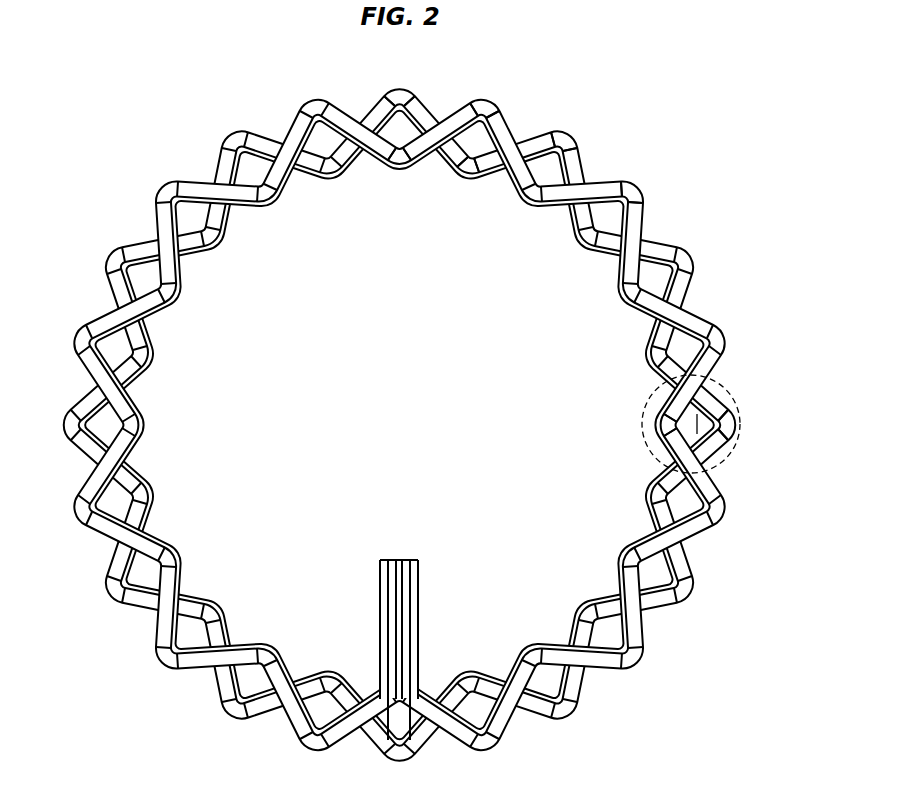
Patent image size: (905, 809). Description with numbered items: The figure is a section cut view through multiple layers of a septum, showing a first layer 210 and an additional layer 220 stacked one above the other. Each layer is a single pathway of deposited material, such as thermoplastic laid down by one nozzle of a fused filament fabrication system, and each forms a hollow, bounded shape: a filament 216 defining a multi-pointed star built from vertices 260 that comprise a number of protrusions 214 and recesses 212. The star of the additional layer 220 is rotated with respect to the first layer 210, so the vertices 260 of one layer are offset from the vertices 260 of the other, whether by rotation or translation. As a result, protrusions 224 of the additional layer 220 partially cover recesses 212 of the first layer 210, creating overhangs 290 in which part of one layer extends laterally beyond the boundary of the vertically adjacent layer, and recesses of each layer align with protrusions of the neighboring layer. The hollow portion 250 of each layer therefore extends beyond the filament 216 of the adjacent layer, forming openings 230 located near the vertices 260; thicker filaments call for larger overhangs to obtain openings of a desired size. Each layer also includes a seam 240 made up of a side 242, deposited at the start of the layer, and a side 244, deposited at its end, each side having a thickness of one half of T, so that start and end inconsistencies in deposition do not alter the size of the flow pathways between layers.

The first layer 210 is at (727, 330).
The additional layer 220 is at (703, 255).
The recesses 212 is at (660, 417).
The protrusions 214 is at (572, 138).
The filament 216 is at (632, 188).
The protrusions 224 is at (723, 393).
The openings 230 is at (695, 422).
The seam 240 is at (423, 553).
The side 242 is at (418, 580).
The side 244 is at (380, 589).
The hollow portion 250 is at (418, 405).
The vertices 260 is at (391, 88).
The overhangs 290 is at (735, 441).
The thickness T is at (418, 499).